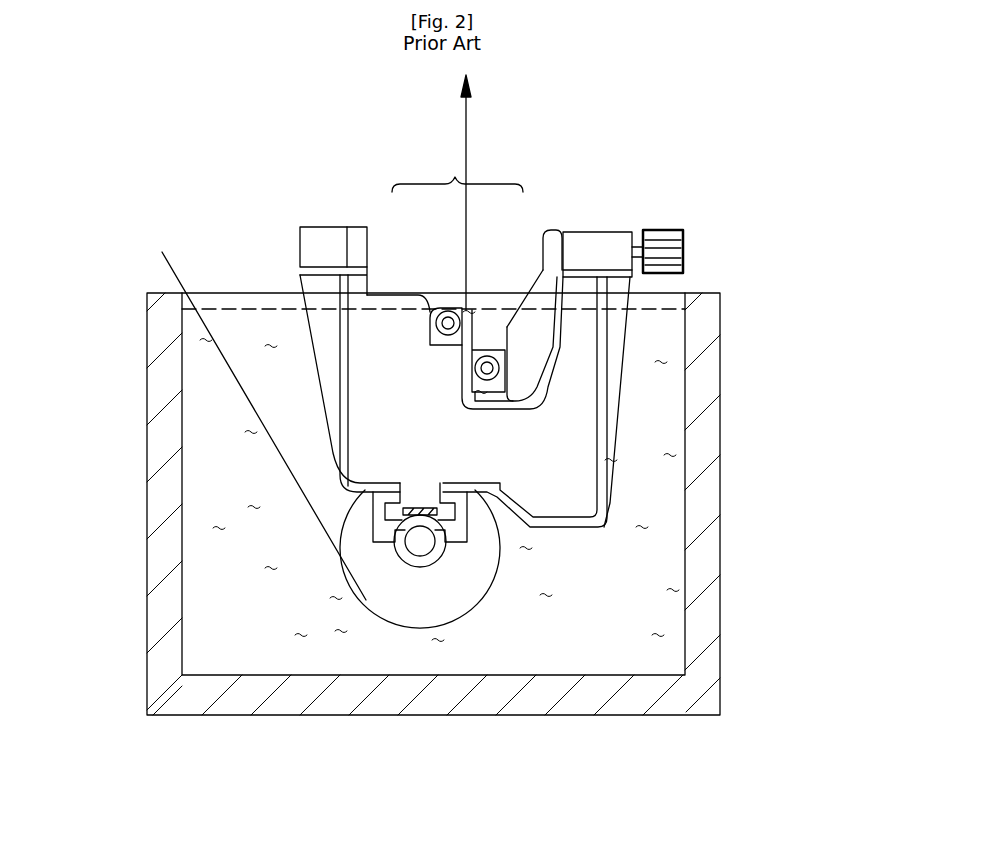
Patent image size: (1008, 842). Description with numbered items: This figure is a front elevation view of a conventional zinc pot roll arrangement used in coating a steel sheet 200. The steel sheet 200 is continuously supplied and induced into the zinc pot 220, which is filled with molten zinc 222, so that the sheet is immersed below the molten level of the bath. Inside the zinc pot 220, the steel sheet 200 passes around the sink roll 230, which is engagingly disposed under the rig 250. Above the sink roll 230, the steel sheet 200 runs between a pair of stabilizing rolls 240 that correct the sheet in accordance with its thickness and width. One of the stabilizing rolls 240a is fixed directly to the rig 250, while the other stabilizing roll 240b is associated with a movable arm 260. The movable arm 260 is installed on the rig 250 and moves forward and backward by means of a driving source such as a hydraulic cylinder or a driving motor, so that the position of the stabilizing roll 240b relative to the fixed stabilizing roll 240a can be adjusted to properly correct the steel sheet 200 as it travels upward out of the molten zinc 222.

The steel sheet 200 is at (464, 120).
The zinc pot 220 is at (720, 541).
The molten zinc 222 is at (663, 595).
The sink roll 230 is at (423, 608).
The stabilizing rolls 240 is at (451, 267).
The stabilizing roll 240a is at (445, 302).
The stabilizing roll 240b is at (477, 345).
The rig 250 is at (607, 422).
The movable arm 260 is at (527, 338).